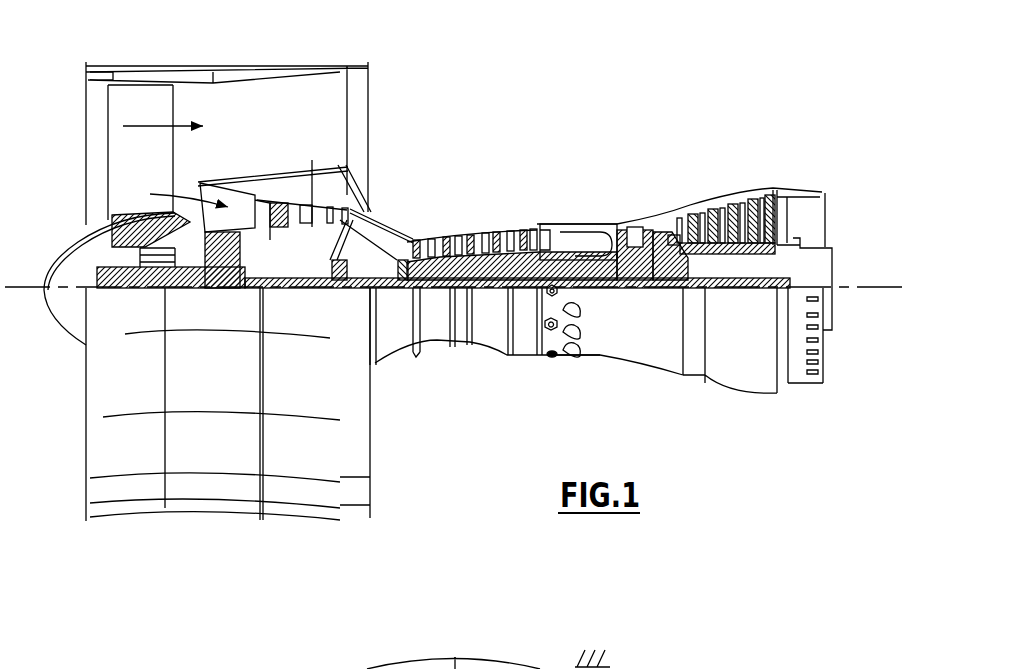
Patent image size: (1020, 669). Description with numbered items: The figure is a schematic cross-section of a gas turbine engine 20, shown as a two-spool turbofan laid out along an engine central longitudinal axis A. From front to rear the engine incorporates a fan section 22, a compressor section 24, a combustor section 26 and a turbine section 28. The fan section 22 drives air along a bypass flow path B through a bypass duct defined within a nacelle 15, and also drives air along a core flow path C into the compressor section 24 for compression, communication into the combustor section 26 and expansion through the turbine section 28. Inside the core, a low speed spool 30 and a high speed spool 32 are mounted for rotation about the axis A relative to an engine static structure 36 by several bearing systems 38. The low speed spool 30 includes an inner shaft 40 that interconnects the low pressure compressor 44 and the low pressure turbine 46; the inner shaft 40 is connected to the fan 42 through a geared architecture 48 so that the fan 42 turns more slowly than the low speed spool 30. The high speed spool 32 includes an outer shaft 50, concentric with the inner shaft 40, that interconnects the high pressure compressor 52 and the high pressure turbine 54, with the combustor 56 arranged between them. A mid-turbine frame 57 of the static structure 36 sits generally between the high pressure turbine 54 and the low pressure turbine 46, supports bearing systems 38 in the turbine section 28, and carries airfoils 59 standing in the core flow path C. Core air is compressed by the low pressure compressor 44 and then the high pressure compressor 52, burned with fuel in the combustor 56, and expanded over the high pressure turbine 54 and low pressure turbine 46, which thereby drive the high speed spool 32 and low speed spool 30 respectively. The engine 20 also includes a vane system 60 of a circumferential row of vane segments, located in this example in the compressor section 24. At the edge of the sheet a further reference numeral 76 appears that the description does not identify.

The nacelle 15 is at (230, 72).
The gas turbine engine 20 is at (590, 106).
The fan section 22 is at (173, 62).
The compressor section 24 is at (410, 212).
The combustor section 26 is at (583, 203).
The turbine section 28 is at (698, 178).
The low speed spool 30 is at (492, 290).
The high speed spool 32 is at (525, 268).
The engine static structure 36 is at (523, 353).
The bearing systems 38 is at (337, 290).
The inner shaft 40 is at (385, 288).
The fan 42 is at (157, 165).
The low pressure compressor 44 is at (315, 193).
The low pressure turbine 46 is at (733, 192).
The geared architecture 48 is at (232, 290).
The outer shaft 50 is at (588, 290).
The high pressure compressor 52 is at (478, 233).
The high pressure turbine 54 is at (636, 228).
The combustor 56 is at (583, 240).
The mid-turbine frame 57 is at (672, 210).
The airfoils 59 is at (683, 247).
The vane system 60 is at (303, 192).
The component (partial figure) 76 is at (620, 667).
The engine central longitudinal axis A is at (893, 287).
The bypass flow path B is at (150, 125).
The core flow path C is at (181, 193).